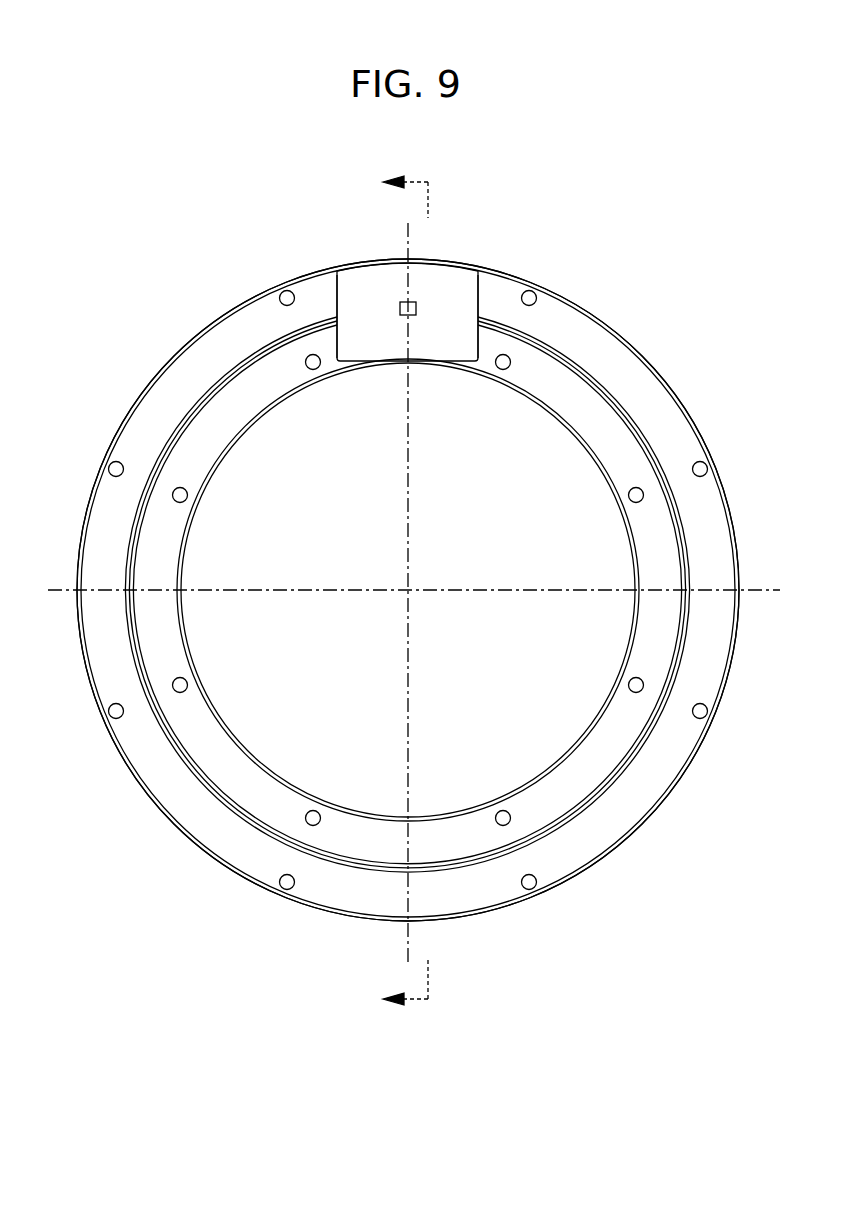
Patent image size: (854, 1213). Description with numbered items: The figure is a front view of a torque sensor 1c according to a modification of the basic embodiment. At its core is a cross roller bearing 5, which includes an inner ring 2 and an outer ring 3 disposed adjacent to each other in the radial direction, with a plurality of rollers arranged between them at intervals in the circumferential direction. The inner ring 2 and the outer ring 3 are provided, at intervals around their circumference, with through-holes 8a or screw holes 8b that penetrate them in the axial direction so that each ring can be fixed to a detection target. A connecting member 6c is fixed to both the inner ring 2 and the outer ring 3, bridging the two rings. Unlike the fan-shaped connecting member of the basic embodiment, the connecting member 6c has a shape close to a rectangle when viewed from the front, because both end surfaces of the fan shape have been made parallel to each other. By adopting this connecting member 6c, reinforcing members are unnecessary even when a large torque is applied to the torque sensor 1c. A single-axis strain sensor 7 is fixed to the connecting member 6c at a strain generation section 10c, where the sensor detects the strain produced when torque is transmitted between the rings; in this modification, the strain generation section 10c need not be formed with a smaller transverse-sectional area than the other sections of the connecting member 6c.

The torque sensor 1c is at (174, 298).
The inner ring 2 is at (255, 802).
The outer ring 3 is at (173, 793).
The cross roller bearing 5 is at (243, 890).
The connecting member 6c is at (470, 260).
The single-axis strain sensor 7 is at (400, 309).
The through-holes 8a is at (522, 878).
The screw holes 8b is at (510, 824).
The strain generation section 10c is at (428, 332).